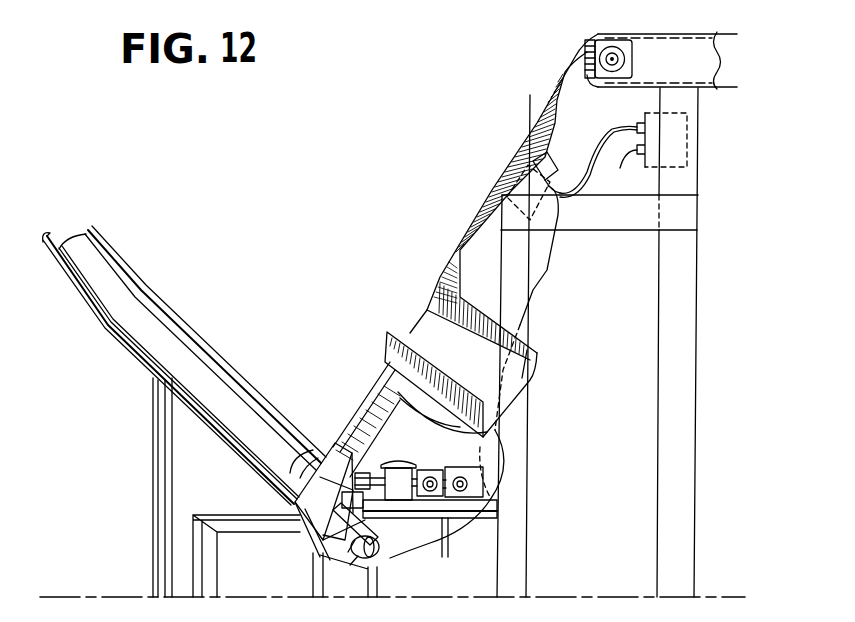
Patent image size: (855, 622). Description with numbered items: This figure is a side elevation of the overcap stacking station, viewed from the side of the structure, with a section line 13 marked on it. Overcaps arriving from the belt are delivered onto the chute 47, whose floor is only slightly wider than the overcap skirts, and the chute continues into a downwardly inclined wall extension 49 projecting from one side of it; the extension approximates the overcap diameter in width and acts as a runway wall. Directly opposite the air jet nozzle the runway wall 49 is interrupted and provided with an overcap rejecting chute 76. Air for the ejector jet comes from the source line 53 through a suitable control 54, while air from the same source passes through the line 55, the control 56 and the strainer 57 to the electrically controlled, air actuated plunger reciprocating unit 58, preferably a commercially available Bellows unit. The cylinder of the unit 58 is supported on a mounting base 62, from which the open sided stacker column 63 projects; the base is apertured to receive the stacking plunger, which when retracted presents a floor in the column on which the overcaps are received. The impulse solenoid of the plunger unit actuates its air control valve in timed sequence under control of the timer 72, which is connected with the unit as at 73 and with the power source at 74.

The section line 13- 13 is at (443, 228).
The chute 47 is at (488, 198).
The wall extension 49 is at (378, 395).
The source line 53 is at (448, 545).
The control 54 is at (487, 497).
The line 55 is at (388, 560).
The control 56 is at (428, 470).
The strainer 57 is at (392, 462).
The plunger reciprocating unit 58 is at (346, 556).
The mounting base 62 is at (320, 450).
The stacker column 63 is at (113, 333).
The timer 72 is at (552, 168).
The connection 73 is at (545, 272).
The power source connection 74 is at (645, 114).
The overcap rejecting chute 76 is at (520, 387).